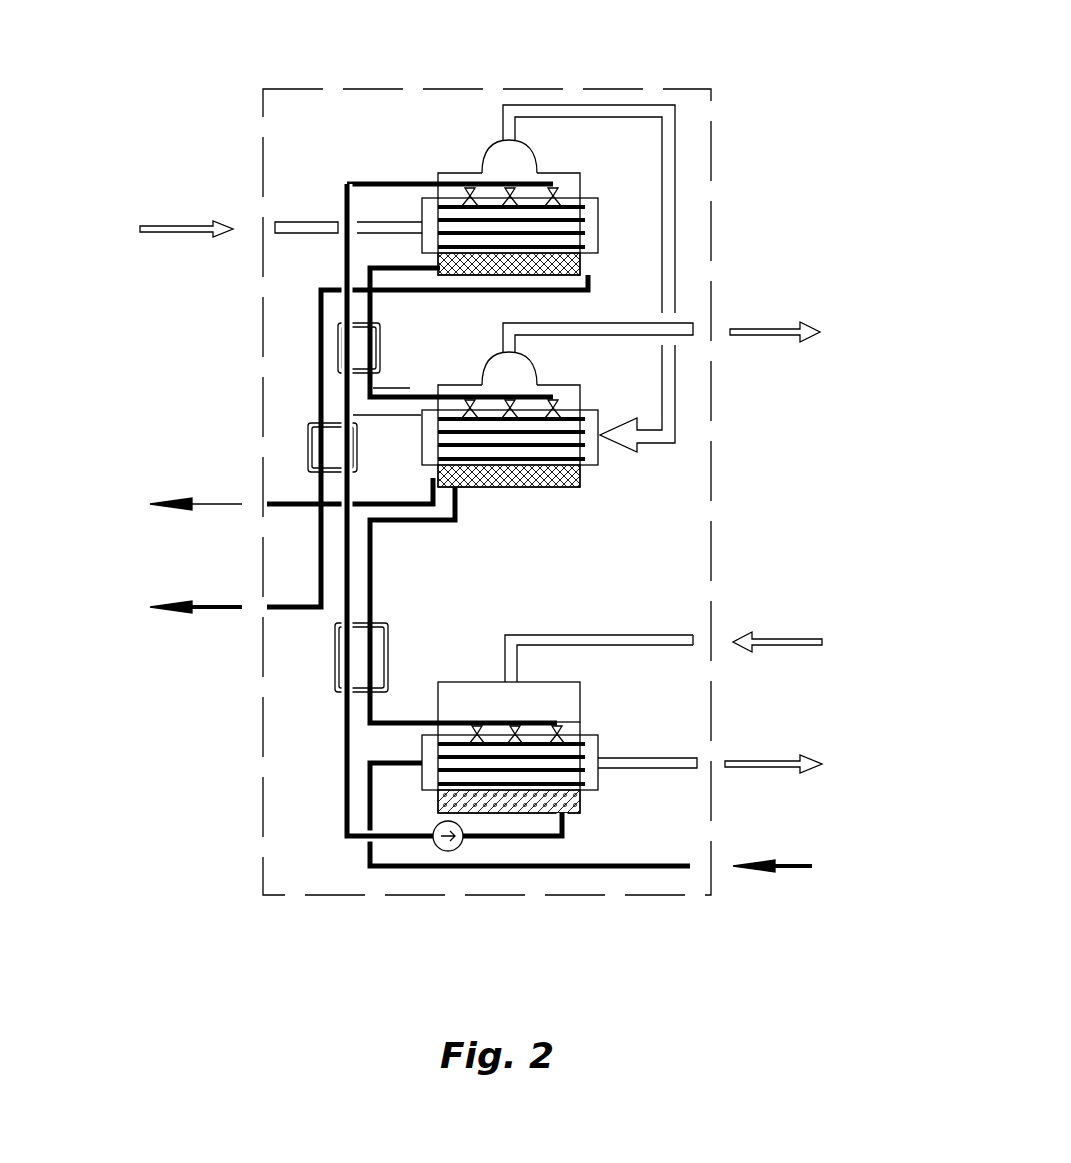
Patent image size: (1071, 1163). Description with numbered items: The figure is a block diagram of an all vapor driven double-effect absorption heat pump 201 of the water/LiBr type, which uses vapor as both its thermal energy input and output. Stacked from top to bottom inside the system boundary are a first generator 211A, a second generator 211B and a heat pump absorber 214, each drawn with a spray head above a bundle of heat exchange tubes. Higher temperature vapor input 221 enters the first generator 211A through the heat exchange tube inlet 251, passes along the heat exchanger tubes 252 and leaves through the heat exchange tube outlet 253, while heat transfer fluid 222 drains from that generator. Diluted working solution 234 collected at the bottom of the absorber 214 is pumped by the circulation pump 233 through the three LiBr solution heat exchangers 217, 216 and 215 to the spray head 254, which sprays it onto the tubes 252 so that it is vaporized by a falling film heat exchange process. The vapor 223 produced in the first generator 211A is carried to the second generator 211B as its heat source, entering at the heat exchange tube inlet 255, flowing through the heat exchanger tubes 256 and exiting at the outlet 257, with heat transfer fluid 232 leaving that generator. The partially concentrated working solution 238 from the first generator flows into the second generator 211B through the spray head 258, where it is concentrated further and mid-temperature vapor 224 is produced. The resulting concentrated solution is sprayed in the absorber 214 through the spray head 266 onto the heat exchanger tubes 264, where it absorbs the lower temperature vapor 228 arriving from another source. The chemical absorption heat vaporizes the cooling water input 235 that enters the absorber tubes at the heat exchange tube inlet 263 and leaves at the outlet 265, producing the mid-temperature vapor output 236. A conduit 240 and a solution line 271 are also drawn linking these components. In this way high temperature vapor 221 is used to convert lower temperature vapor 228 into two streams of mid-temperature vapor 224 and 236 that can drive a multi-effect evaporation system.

The heat pump 201 is at (263, 89).
The first generator 211A is at (438, 177).
The second generator 211B is at (553, 398).
The heat pump absorber 214 is at (438, 686).
The LiBr solution heat exchanger 215 is at (340, 360).
The LiBr solution heat exchanger 216 is at (310, 445).
The LiBr solution heat exchanger 217 is at (333, 662).
The higher temperature vapor input 221 is at (160, 222).
The heat transfer fluid output 222 is at (187, 605).
The vapor produced from the first generator 223 is at (618, 108).
The mid-temperature vapor 224 is at (766, 324).
The lower temperature vapor 228 is at (795, 634).
The heat transfer fluid output 232 is at (212, 502).
The diluted working solution circulation pump 233 is at (448, 851).
The diluted working solution 234 is at (450, 805).
The cooling water input 235 is at (780, 866).
The mid-temperature vapor output 236 is at (778, 760).
The concentrated working solution 238 is at (438, 256).
The water conduit 240 is at (372, 548).
The heat exchange tube inlet 251 is at (422, 196).
The heat exchanger tube 252 is at (558, 190).
The heat exchange tube outlet 253 is at (598, 218).
The sprayer 254 is at (463, 186).
The heat exchange tube inlet 255 is at (600, 427).
The heat exchanger tube 256 is at (580, 467).
The heat exchange tube outlet 257 is at (420, 415).
The sprayer 258 is at (533, 385).
The heat exchange tube inlet 263 is at (375, 388).
The heat exchanger tube 264 is at (557, 743).
The heat exchange tube outlet 265 is at (422, 740).
The sprayer 266 is at (513, 722).
The water supply conduit 271 is at (347, 208).